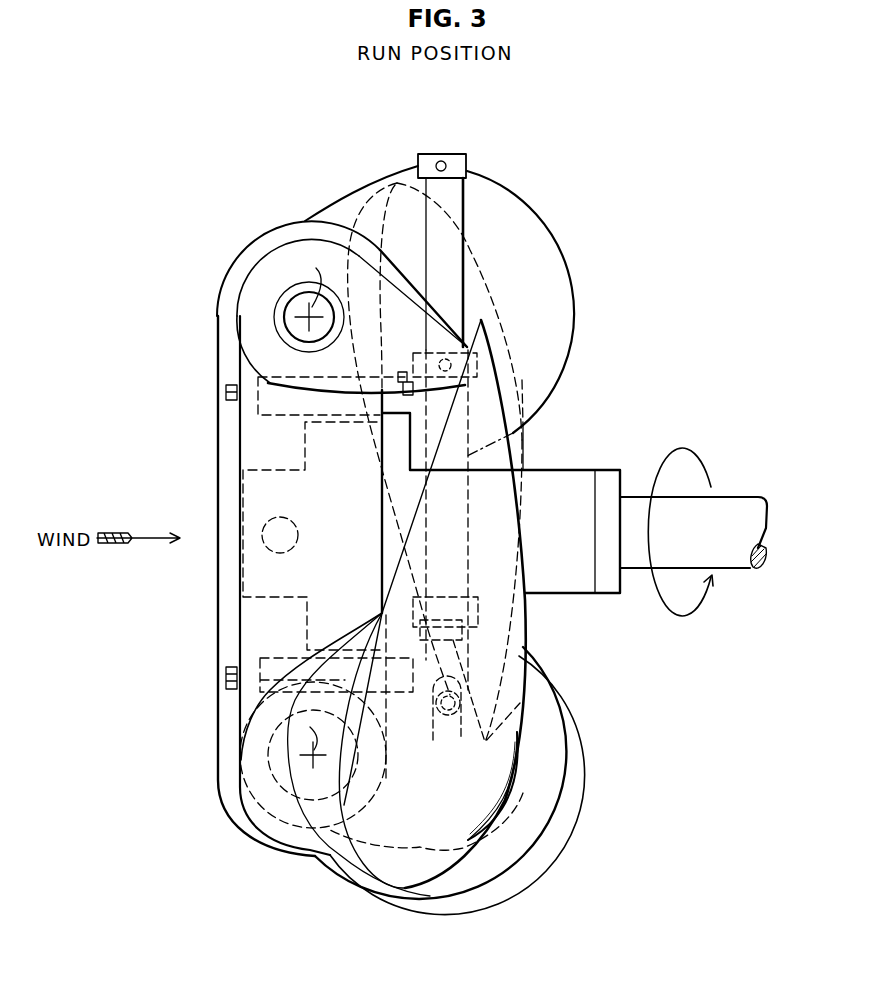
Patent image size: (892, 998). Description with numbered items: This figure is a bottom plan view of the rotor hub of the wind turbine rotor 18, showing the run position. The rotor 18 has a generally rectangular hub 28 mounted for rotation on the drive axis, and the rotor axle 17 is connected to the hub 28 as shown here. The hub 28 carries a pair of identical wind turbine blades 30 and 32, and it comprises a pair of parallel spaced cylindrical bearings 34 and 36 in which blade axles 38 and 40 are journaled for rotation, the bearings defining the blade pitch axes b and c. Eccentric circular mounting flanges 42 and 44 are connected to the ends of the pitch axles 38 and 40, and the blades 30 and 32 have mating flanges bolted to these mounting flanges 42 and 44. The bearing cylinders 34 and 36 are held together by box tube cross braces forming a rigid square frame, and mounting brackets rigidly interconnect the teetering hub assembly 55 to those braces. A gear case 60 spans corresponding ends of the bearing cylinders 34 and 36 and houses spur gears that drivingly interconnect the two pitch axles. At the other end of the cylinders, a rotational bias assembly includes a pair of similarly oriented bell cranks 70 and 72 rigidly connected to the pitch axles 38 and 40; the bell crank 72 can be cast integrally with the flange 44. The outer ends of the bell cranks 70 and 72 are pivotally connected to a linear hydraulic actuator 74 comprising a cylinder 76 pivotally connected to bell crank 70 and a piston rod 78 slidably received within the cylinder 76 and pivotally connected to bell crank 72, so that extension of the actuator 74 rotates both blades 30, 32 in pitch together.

The rotor axle 17 is at (742, 497).
The rotor 18 is at (672, 383).
The hub 28 is at (228, 645).
The wind turbine blade 30 is at (525, 447).
The wind turbine blade 32 is at (528, 614).
The cylindrical bearing 34 is at (272, 283).
The cylindrical bearing 36 is at (288, 806).
The blade axle 38 is at (293, 322).
The blade axle 40 is at (270, 745).
The eccentric circular mounting flange 42 is at (569, 277).
The eccentric circular mounting flange 44 is at (574, 762).
The teetering hub assembly 55 is at (322, 567).
The gear case 60 is at (218, 440).
The bell crank 70 is at (397, 291).
The bell crank 72 is at (424, 760).
The linear hydraulic actuator 74 is at (476, 225).
The cylinder 76 is at (465, 307).
The piston rod 78 is at (455, 640).